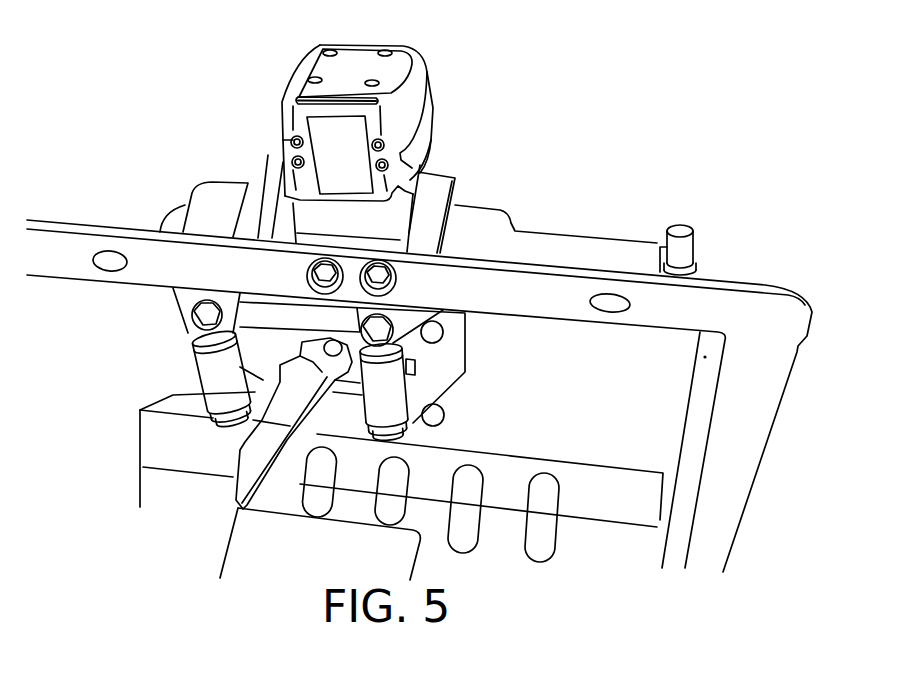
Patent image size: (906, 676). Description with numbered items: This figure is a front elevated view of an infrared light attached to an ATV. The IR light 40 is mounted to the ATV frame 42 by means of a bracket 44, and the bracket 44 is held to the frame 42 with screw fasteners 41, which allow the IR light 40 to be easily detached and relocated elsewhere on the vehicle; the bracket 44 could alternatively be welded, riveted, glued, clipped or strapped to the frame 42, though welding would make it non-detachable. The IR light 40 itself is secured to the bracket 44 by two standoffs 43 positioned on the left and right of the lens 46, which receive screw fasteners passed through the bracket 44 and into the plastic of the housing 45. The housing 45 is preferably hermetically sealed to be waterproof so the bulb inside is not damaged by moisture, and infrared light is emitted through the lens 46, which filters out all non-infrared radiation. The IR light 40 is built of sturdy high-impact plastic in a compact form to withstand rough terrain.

The IR light 40 is at (446, 76).
The screw fasteners 41 is at (305, 271).
The ATV frame 42 is at (556, 303).
The standoffs 43 is at (292, 184).
The bracket 44 is at (361, 233).
The housing 45 is at (419, 116).
The lens 46 is at (352, 161).